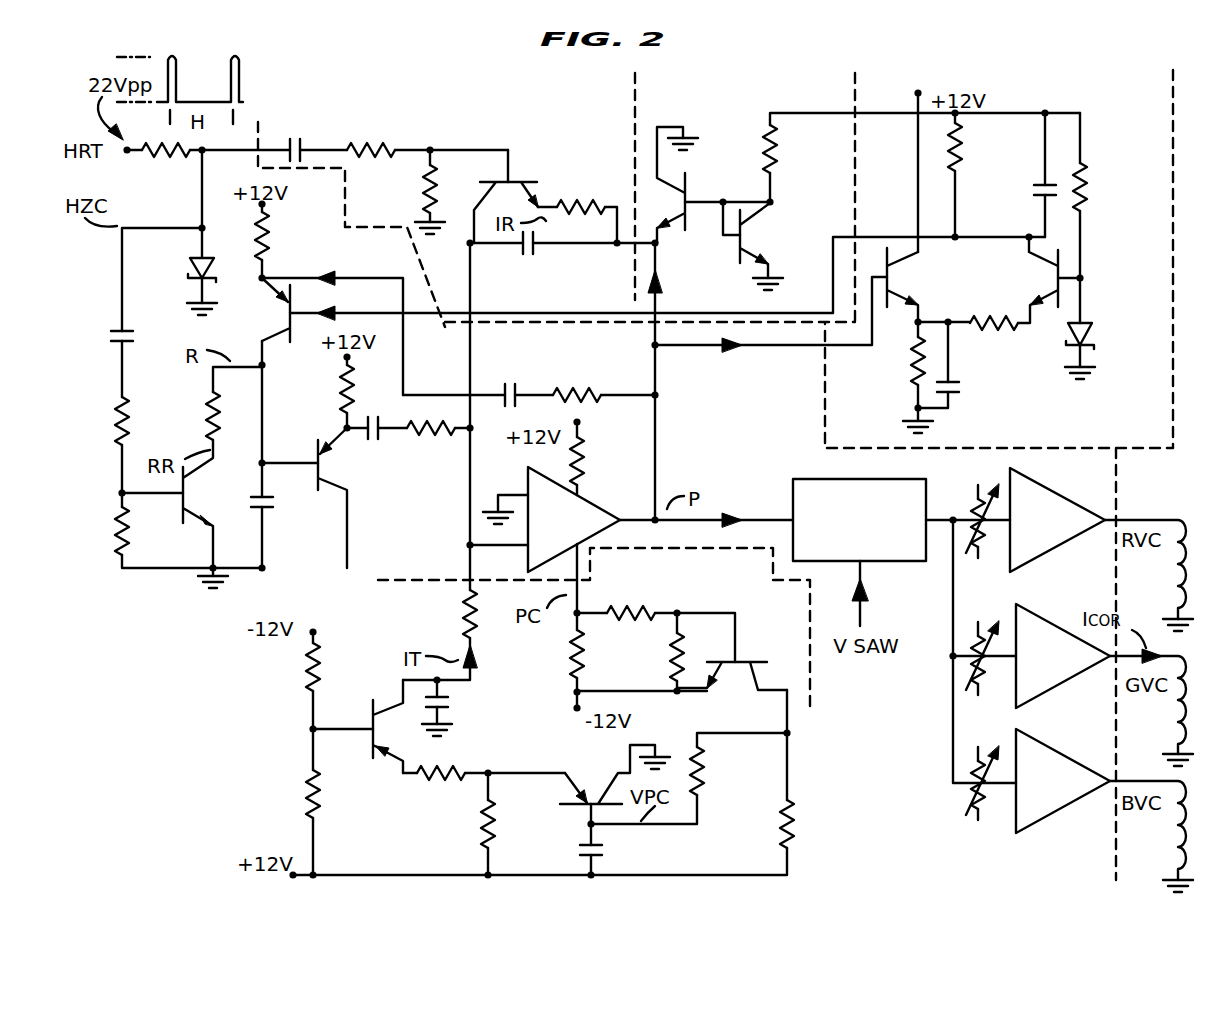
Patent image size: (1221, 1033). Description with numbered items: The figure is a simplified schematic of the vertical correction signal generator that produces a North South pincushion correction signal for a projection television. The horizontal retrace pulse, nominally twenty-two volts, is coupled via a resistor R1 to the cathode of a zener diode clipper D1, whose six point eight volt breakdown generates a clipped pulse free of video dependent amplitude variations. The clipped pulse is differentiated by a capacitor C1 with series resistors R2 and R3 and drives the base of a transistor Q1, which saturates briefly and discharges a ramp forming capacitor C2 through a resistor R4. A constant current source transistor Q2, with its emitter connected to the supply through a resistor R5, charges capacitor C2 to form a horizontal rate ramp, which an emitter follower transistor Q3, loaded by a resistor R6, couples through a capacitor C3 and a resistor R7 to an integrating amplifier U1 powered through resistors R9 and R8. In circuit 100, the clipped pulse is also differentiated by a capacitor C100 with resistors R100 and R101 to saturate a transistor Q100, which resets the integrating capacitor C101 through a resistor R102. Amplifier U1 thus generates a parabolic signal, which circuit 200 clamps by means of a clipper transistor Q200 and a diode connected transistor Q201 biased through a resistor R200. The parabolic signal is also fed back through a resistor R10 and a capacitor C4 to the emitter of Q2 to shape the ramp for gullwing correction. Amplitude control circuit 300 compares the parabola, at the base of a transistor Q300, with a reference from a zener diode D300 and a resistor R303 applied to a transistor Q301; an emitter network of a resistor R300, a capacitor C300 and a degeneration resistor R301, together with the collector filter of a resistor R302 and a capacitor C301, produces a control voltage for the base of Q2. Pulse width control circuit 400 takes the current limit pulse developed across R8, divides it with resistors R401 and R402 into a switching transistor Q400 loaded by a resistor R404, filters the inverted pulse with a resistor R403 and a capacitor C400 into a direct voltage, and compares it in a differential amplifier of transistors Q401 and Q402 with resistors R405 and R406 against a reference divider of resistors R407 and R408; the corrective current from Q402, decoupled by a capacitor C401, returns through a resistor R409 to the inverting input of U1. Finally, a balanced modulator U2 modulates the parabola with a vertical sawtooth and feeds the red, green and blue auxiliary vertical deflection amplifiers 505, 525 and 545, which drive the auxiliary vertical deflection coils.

The resistor R1 is at (165, 178).
The capacitor C100 is at (299, 124).
The resistor R100 is at (370, 122).
The resistor R101 is at (395, 192).
The capacitor C1 is at (86, 329).
The resistor R2 is at (84, 421).
The resistor R3 is at (84, 531).
The zener diode clipper D1 is at (177, 271).
The transistor Q1 is at (209, 504).
The resistor R4 is at (184, 418).
The transistor Q2 is at (260, 310).
The resistor R5 is at (297, 240).
The transistor Q3 is at (312, 498).
The resistor R6 is at (310, 392).
The capacitor C2 is at (295, 522).
The capacitor C3 is at (373, 455).
The resistor R7 is at (430, 457).
The transistor Q100 is at (506, 183).
The resistor R102 is at (577, 184).
The integrating capacitor C101 is at (528, 270).
The clipper transistor Q200 is at (704, 185).
The transistor Q201 is at (778, 246).
The resistor R200 is at (805, 152).
The resistor R302 is at (988, 147).
The capacitor C301 is at (1014, 202).
The resistor R303 is at (1116, 188).
The transistor Q300 is at (927, 285).
The transistor Q301 is at (1019, 280).
The resistor R301 is at (996, 349).
The resistor R300 is at (884, 370).
The capacitor C300 is at (978, 406).
The zener diode D300 is at (1110, 340).
The capacitor C4 is at (513, 372).
The resistor R10 is at (578, 370).
The resistor R9 is at (606, 453).
The integrating amplifier U1 is at (574, 519).
The balanced modulator U2 is at (859, 520).
The red vertical auxiliary deflection amplifier 505 is at (1035, 520).
The green vertical auxiliary deflection amplifier 525 is at (1038, 656).
The blue vertical auxiliary deflection amplifier 545 is at (1038, 781).
The resistor R409 is at (432, 629).
The capacitor C401 is at (470, 709).
The transistor Q402 is at (371, 722).
The resistor R408 is at (260, 674).
The resistor R407 is at (260, 794).
The resistor R405 is at (490, 816).
The resistor R406 is at (447, 833).
The transistor Q401 is at (615, 774).
The capacitor C400 is at (626, 854).
The resistor R403 is at (734, 772).
The resistor R404 is at (750, 831).
The transistor Q400 is at (732, 694).
The resistor R401 is at (634, 587).
The resistor R402 is at (639, 658).
The resistor R8 is at (547, 657).
The horizontal rate integrator and reset pulse generator 100 is at (584, 99).
The clipper or active clamp circuit 200 is at (802, 97).
The amplitude control circuit 300 is at (1122, 99).
The pulse width control circuit 400 is at (719, 587).